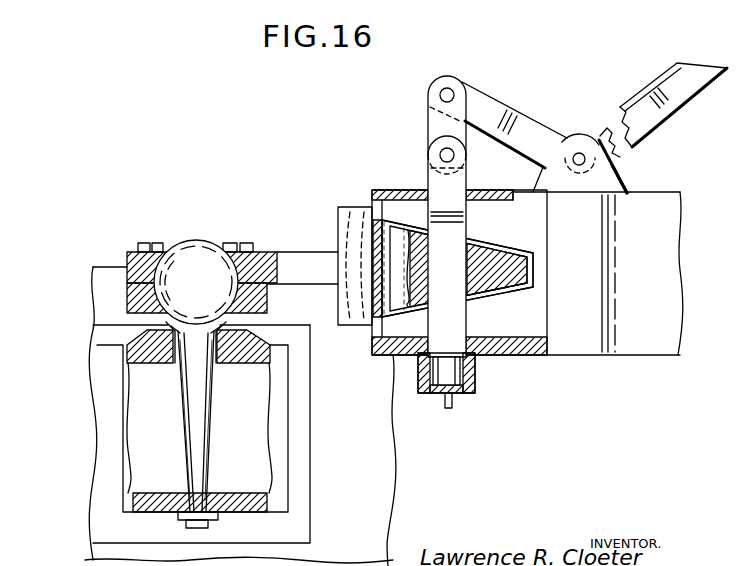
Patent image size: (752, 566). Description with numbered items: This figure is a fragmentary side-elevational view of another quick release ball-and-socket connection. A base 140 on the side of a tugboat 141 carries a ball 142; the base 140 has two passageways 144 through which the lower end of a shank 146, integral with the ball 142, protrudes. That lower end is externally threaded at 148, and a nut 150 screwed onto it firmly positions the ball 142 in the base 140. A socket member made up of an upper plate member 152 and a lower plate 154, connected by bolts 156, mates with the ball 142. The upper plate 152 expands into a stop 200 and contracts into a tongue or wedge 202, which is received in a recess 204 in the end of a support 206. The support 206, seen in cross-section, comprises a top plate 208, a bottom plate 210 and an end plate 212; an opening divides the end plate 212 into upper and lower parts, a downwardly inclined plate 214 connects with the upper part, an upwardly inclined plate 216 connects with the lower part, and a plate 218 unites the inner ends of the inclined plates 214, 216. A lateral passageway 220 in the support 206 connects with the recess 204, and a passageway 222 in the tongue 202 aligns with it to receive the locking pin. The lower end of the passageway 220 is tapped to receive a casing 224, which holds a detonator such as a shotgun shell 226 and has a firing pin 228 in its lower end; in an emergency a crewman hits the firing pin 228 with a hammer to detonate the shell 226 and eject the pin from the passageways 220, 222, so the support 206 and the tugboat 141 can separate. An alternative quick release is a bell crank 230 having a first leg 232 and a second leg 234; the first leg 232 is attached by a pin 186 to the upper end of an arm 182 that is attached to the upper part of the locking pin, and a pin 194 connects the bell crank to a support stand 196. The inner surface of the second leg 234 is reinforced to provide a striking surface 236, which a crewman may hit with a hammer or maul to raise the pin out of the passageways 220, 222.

The base 140 is at (100, 370).
The tugboat 141 is at (86, 297).
The ball 142 is at (182, 248).
The passageways 144 is at (180, 353).
The shank 146 is at (200, 438).
The externally threaded portion 148 is at (207, 525).
The nut 150 is at (176, 515).
The upper plate member 152 is at (127, 265).
The lower plate 154 is at (123, 306).
The bolts 156 is at (148, 245).
The arm 182 is at (430, 110).
The pin 186 is at (450, 88).
The pin 194 is at (586, 160).
The support stand 196 is at (628, 184).
The stop 200 is at (362, 322).
The tongue or wedge 202 is at (534, 262).
The recess 204 is at (503, 293).
The support 206 is at (672, 324).
The top plate 208 is at (513, 200).
The bottom plate 210 is at (540, 357).
The end plate 212 is at (373, 208).
The downwardly inclined plate 214 is at (515, 249).
The upwardly inclined plate 216 is at (533, 304).
The plate 218 is at (536, 276).
The lateral passageway 220 is at (466, 184).
The passageway 222 is at (437, 258).
The casing 224 is at (476, 372).
The shotgun shell 226 is at (476, 392).
The firing pin 228 is at (448, 409).
The bell crank 230 is at (617, 117).
The first leg 232 is at (533, 127).
The second leg 234 is at (693, 88).
The striking surface 236 is at (667, 72).